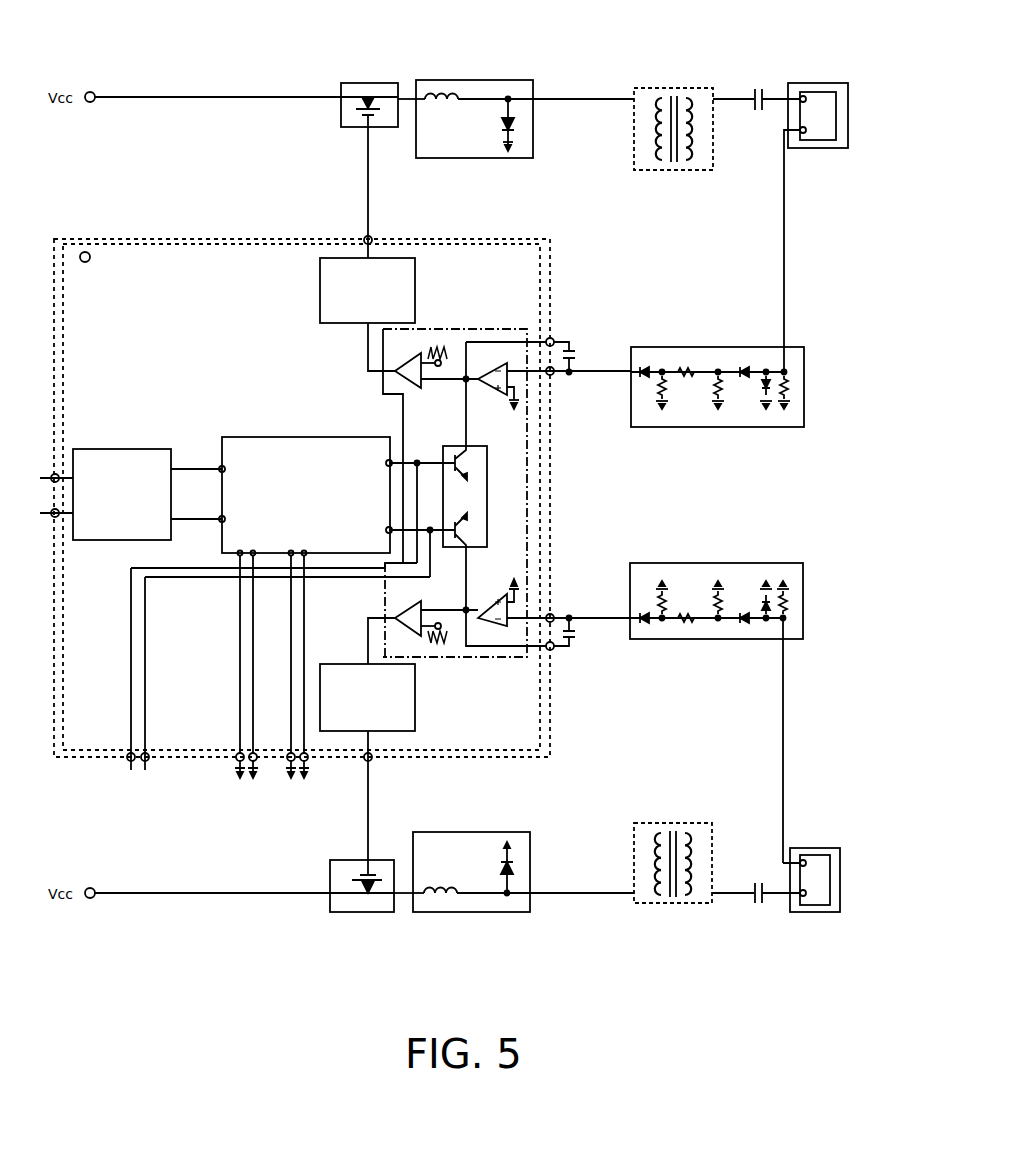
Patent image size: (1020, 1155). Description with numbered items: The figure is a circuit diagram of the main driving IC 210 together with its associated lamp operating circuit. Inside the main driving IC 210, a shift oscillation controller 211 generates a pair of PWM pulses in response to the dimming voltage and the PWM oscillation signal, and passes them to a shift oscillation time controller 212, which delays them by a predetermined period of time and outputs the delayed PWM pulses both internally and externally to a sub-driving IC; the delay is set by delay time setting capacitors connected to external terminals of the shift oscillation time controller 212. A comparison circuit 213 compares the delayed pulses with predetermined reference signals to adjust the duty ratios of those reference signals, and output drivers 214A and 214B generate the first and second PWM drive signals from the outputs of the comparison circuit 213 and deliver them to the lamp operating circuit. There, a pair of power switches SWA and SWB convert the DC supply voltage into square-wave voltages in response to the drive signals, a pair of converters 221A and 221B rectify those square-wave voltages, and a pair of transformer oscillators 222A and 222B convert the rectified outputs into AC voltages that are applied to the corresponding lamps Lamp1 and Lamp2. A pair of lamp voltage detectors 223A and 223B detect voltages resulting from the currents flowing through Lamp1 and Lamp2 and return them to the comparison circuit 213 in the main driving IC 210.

The power switch SWA is at (370, 83).
The power switch SWB is at (360, 915).
The converter 221A is at (478, 80).
The converter 221B is at (470, 914).
The transformer oscillator 222A is at (678, 88).
The transformer oscillator 222B is at (682, 905).
The lamp Lamp1 is at (828, 83).
The lamp Lamp2 is at (825, 914).
The lamp voltage detector 223A is at (706, 346).
The lamp voltage detector 223B is at (712, 640).
The main driving IC 210 is at (552, 470).
The shift oscillation controller 211 is at (122, 449).
The shift oscillation time controller 212 is at (275, 437).
The comparison circuit 213 is at (494, 328).
The output driver 214A is at (320, 298).
The output driver 214B is at (415, 700).